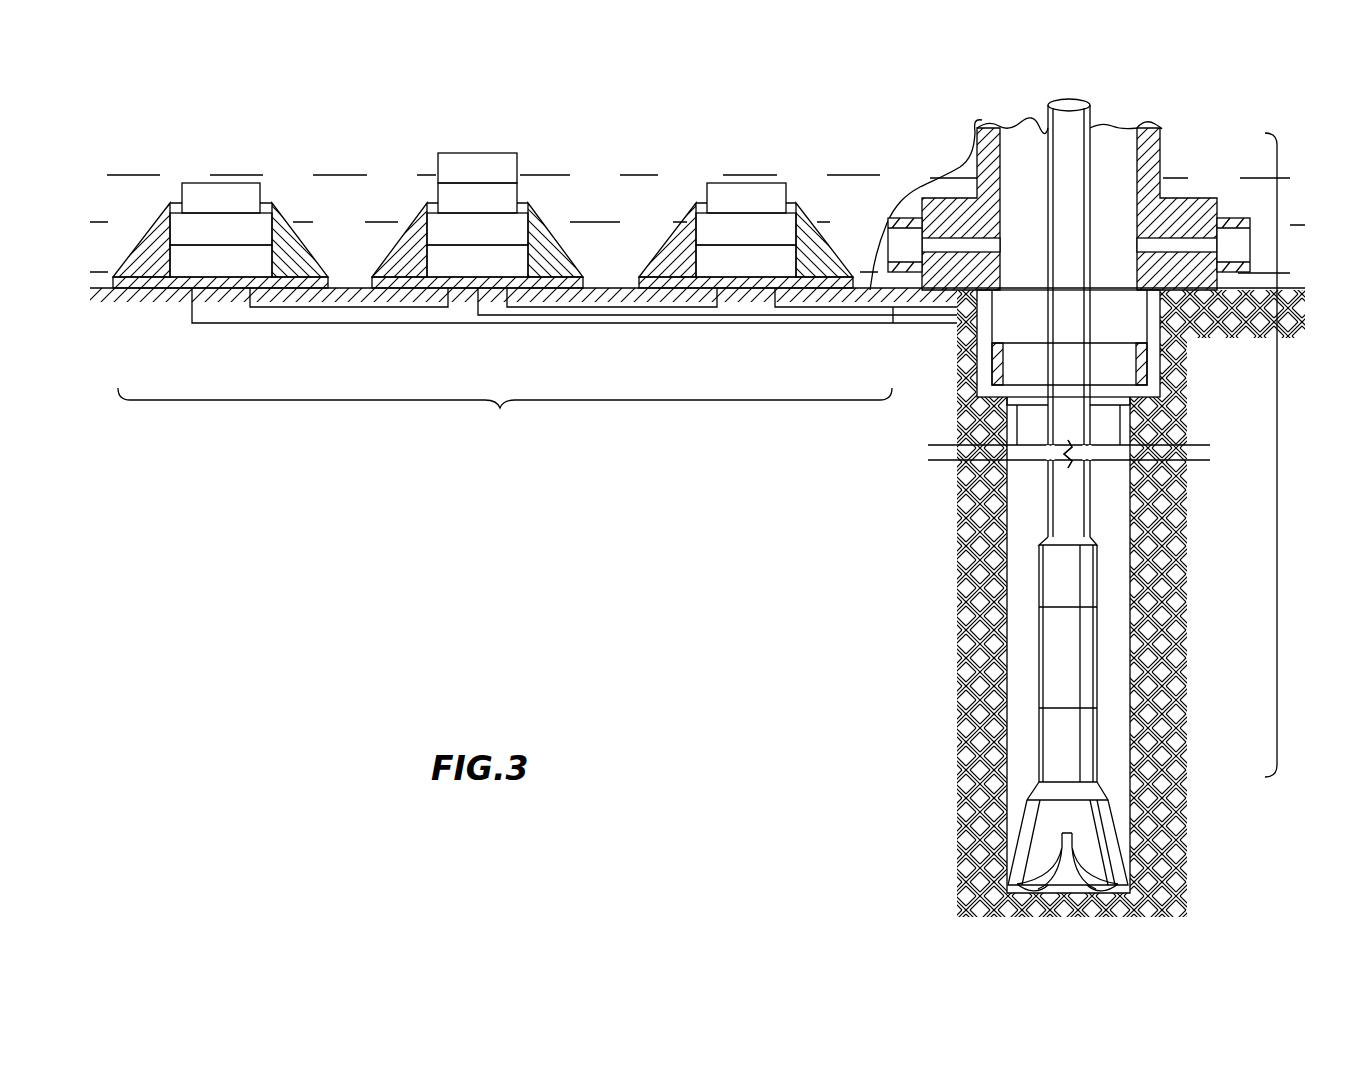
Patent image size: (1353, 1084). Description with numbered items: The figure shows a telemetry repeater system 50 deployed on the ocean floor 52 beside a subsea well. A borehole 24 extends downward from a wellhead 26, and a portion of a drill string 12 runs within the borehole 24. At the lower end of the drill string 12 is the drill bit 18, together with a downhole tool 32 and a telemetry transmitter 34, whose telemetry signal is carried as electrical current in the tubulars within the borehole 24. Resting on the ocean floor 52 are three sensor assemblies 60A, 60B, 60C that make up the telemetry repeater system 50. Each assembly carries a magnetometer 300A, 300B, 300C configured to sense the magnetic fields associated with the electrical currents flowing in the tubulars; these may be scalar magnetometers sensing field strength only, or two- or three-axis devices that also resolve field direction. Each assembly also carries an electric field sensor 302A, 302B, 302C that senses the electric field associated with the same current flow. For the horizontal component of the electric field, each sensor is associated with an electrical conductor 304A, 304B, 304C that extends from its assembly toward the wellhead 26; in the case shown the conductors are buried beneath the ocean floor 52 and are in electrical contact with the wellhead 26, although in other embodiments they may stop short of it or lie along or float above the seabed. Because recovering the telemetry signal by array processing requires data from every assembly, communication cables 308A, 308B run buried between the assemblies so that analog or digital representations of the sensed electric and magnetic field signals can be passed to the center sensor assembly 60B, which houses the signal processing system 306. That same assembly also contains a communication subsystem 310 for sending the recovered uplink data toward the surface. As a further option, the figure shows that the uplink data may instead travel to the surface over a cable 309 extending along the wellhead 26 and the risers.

The drill string 12 is at (1297, 457).
The drill bit 18 is at (1113, 827).
The borehole 24 is at (1006, 515).
The wellhead 26 is at (1187, 197).
The downhole tool 32 is at (1038, 662).
The telemetry transmitter 34 is at (1040, 571).
The telemetry repeater system 50 is at (500, 408).
The ocean floor 52 is at (100, 293).
The sensor assembly 60A is at (248, 233).
The sensor assembly 60B is at (509, 220).
The sensor assembly 60C is at (770, 233).
The magnetometer 300A is at (221, 229).
The magnetometer 300B is at (477, 229).
The magnetometer 300C is at (746, 229).
The electric field sensor 302A is at (221, 261).
The electric field sensor 302B is at (477, 261).
The electric field sensor 302C is at (746, 261).
The electrical conductor 304A is at (257, 325).
The electrical conductor 304B is at (587, 320).
The electrical conductor 304C is at (893, 310).
The signal processing system 306 is at (477, 199).
The communication cable 308A is at (343, 308).
The communication cable 308B is at (672, 310).
The cable 309 is at (962, 160).
The communication subsystem 310 is at (477, 169).